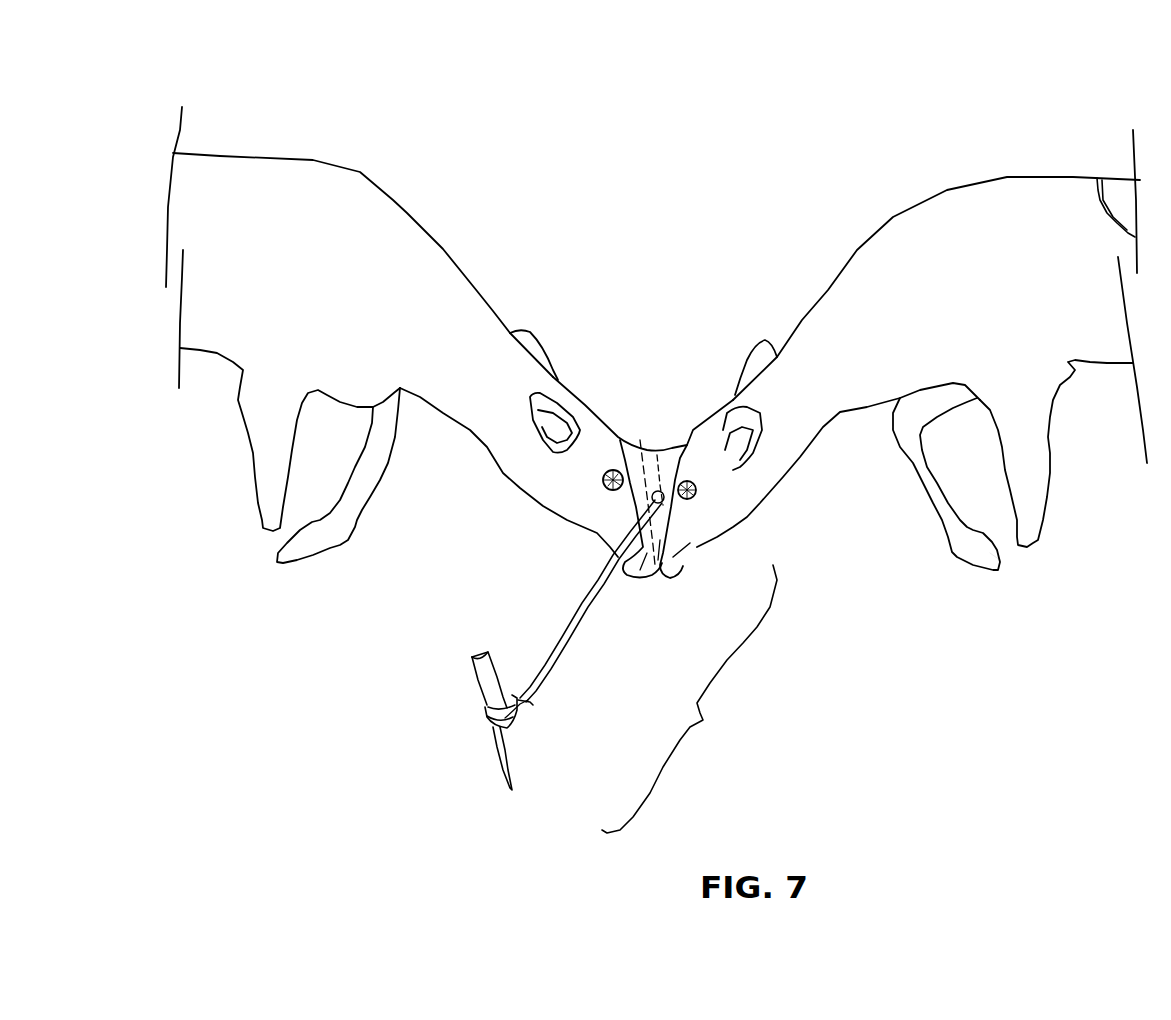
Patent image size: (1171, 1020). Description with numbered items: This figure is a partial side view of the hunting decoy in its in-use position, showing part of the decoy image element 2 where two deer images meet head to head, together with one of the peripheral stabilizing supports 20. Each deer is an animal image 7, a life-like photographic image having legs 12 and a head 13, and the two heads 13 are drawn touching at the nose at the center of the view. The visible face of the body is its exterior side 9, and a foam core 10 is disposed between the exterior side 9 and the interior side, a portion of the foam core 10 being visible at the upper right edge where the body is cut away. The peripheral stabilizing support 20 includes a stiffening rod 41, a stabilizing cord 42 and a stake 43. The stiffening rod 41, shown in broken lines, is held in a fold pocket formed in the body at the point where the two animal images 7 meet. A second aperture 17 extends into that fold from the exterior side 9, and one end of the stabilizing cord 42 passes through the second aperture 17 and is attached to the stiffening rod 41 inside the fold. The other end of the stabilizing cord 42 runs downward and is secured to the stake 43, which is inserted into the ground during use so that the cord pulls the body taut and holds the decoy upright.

The decoy image element 2 is at (743, 180).
The animal image 7 is at (410, 207).
The exterior side 9 is at (288, 273).
The foam core 10 is at (1117, 190).
The legs 12 is at (1028, 520).
The head 13 is at (733, 487).
The second aperture 17 is at (686, 548).
The peripheral stabilizing support 20 is at (689, 699).
The stiffening rod 41 is at (640, 437).
The stabilizing cord 42 is at (560, 640).
The stake 43 is at (480, 687).